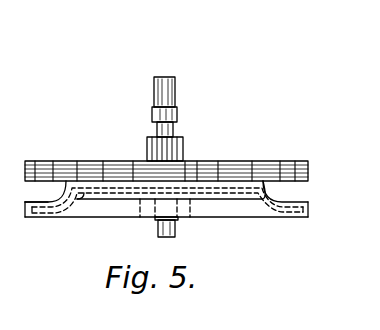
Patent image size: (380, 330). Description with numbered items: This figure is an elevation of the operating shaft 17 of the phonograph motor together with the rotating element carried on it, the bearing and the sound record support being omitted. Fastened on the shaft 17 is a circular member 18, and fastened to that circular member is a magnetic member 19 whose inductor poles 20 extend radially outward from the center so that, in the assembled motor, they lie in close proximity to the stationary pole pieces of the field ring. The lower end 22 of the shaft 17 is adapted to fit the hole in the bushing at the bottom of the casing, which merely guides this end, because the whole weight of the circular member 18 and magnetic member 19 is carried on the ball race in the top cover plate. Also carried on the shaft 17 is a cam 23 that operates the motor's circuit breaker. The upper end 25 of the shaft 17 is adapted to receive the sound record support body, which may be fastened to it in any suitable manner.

The shaft 17 is at (173, 130).
The circular member 18 is at (308, 204).
The magnetic member 19 is at (65, 176).
The inductor poles 20 is at (25, 207).
The lower end of the shaft 22 is at (160, 230).
The cam 23 is at (181, 151).
The upper end of the shaft 25 is at (167, 96).